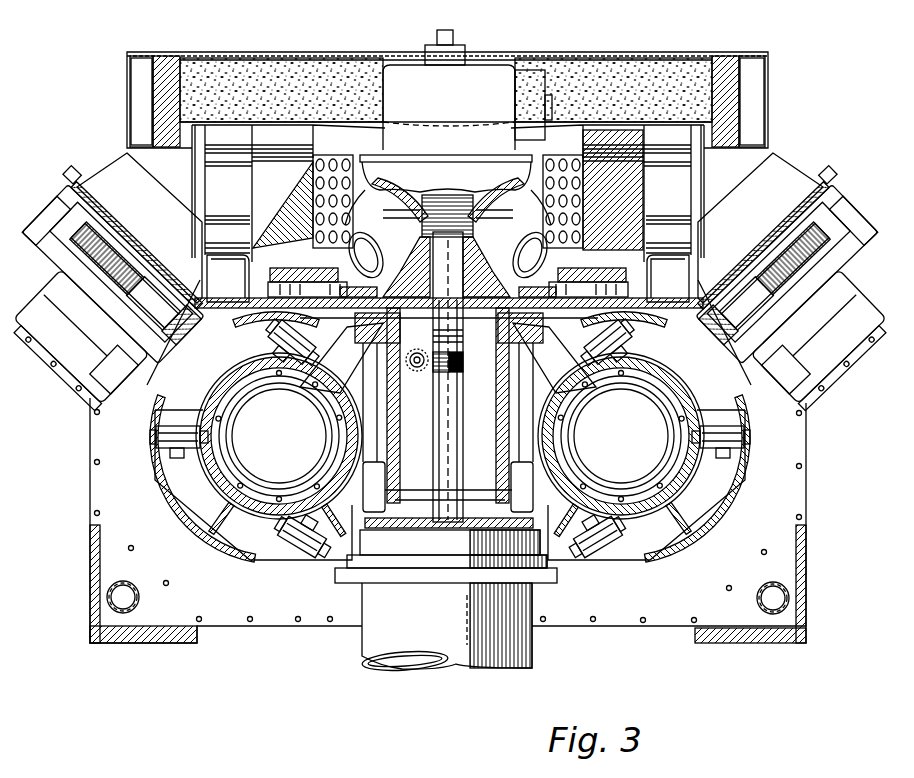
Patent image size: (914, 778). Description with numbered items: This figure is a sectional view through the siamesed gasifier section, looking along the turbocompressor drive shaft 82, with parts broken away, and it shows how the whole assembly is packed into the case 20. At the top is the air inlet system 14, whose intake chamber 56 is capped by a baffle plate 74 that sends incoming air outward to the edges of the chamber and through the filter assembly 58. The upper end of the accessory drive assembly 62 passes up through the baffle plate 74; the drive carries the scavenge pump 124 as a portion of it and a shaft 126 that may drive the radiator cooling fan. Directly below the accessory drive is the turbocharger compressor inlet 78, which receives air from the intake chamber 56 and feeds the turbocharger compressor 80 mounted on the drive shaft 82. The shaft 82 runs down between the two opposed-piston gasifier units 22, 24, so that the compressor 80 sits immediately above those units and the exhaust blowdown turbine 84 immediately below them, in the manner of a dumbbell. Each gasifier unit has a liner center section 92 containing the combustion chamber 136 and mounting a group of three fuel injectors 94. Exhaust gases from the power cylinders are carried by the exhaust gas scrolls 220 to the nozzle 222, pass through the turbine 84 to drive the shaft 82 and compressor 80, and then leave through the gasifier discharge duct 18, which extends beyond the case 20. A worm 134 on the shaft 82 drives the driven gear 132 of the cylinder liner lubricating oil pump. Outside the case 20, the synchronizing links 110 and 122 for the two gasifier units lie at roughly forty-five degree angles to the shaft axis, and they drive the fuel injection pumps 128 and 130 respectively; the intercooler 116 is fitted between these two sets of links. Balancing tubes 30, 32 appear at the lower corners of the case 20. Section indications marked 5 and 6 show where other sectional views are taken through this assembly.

The air inlet system 14 is at (127, 54).
The intake chamber 56 is at (142, 92).
The filter assembly 58 is at (745, 80).
The baffle plate 74 is at (322, 52).
The accessory drive assembly 62 is at (486, 72).
The shaft 126 is at (452, 40).
The scavenge pump 124 is at (530, 80).
The intercooler 116 is at (232, 140).
The turbocharger compressor inlet 78 is at (398, 194).
The turbocharger compressor 80 is at (447, 255).
The drive shaft 82 is at (441, 462).
The driven gear 132 is at (417, 372).
The worm 134 is at (454, 374).
The exhaust gas scrolls 220 is at (358, 440).
The nozzle 222 is at (548, 538).
The exhaust blowdown turbine 84 is at (370, 518).
The gasifier discharge duct 18 is at (528, 640).
The liner center section 92 is at (258, 392).
The fuel injectors 94 is at (272, 366).
The gasifier unit 22 is at (178, 500).
The gasifier unit 24 is at (698, 504).
The combustion chamber 136 is at (450, 519).
The fuel injection pump 128 is at (140, 162).
The fuel injection pump 130 is at (760, 162).
The synchronizing linkage 110 is at (68, 260).
The synchronizing links 122 is at (832, 260).
The case 20 is at (600, 628).
The balancing tube 30 is at (140, 600).
The balancing tube 32 is at (765, 588).
The section line 5 is at (470, 5).
The section line 6 is at (57, 418).